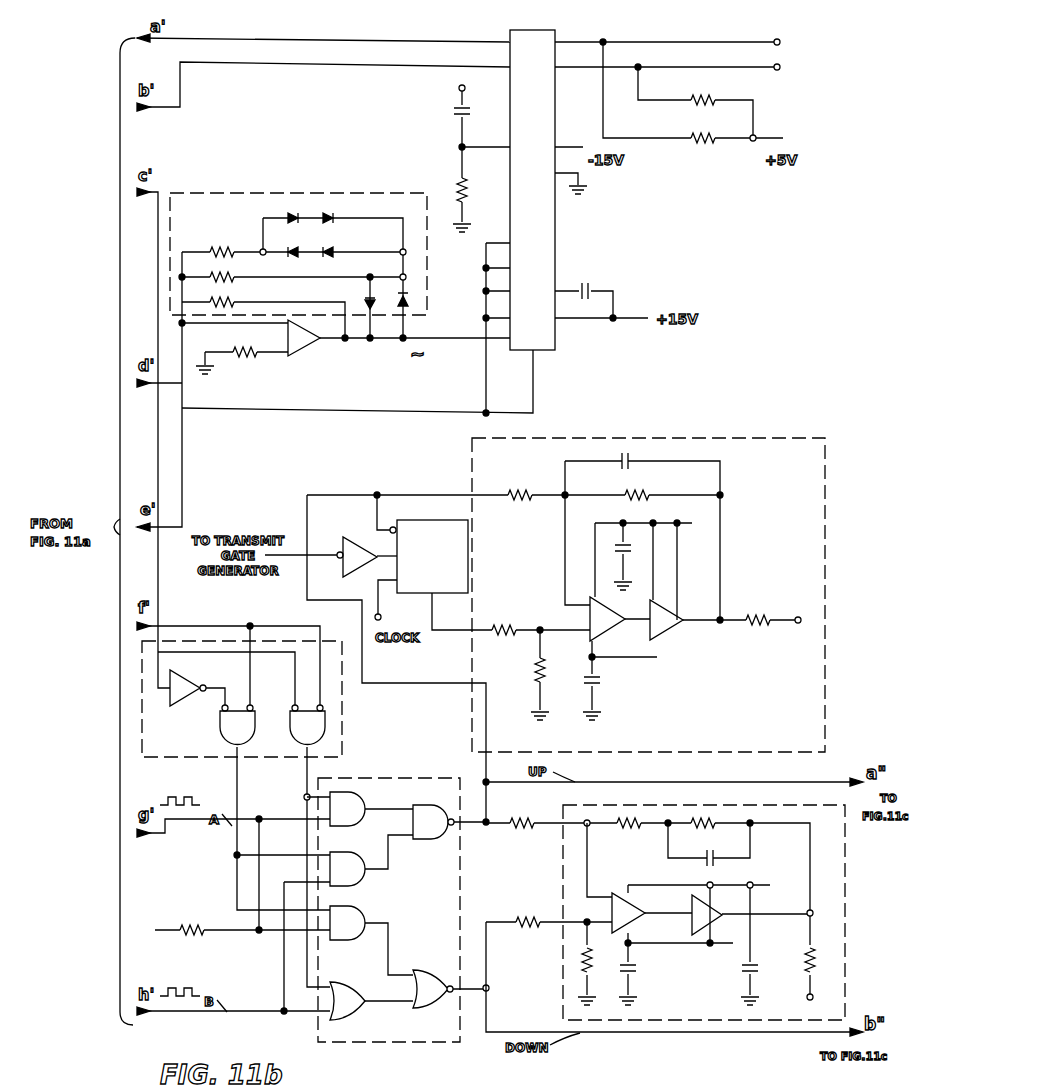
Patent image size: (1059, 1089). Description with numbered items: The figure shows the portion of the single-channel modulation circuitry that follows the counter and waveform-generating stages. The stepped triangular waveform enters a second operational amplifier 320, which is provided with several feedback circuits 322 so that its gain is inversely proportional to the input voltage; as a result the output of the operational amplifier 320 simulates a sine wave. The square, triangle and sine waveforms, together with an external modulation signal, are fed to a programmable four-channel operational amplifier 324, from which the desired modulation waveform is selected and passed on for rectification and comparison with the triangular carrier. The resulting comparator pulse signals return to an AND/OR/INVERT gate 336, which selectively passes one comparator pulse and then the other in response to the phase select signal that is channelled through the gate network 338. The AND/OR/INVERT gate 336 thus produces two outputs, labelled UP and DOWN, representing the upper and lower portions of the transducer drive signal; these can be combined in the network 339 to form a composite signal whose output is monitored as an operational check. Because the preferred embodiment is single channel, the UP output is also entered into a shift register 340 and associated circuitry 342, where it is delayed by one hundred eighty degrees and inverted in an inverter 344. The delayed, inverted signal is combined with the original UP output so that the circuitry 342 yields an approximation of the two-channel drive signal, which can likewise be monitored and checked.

The second operational amplifier 320 is at (308, 349).
The feedback circuits 322 is at (262, 194).
The programmable 4-channel operational amplifier 324 is at (541, 30).
The AND/OR/INVERT gate 336 is at (462, 882).
The gate network 338 is at (342, 745).
The network 339 is at (560, 968).
The shift register 340 is at (462, 523).
The circuitry 342 is at (648, 581).
The inverter 344 is at (588, 625).